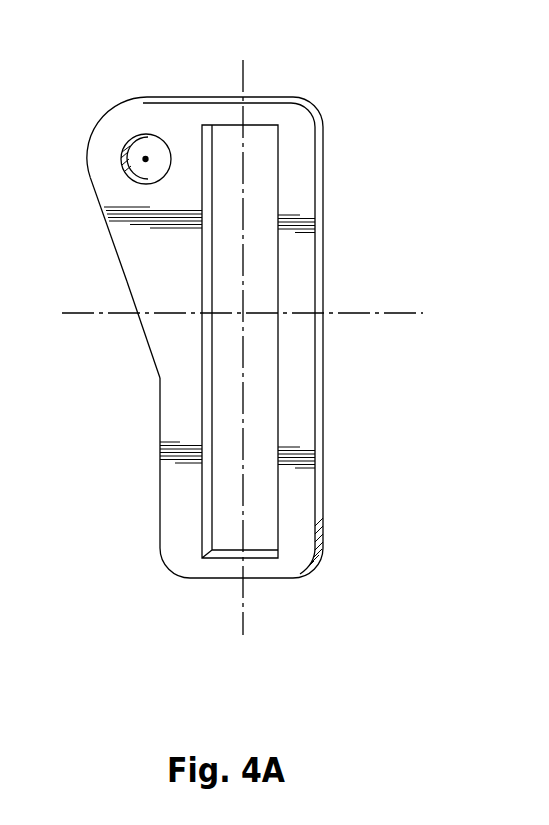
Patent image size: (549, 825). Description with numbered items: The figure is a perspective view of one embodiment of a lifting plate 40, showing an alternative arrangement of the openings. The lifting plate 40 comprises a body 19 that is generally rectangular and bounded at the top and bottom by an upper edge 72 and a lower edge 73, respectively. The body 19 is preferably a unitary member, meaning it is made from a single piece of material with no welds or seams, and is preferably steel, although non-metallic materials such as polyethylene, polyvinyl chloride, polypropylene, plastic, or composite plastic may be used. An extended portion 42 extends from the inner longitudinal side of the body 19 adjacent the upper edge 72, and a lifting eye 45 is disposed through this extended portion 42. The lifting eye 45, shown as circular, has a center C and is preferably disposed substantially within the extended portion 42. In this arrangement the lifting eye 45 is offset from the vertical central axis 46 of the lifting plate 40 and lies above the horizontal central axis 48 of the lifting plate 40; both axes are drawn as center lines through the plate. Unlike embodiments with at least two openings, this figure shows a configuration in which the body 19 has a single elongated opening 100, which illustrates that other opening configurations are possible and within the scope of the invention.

The lifting plate 40 is at (250, 364).
The upper edge 72 is at (201, 96).
The lower edge 73 is at (203, 578).
The extended portion 42 is at (143, 253).
The body 19 is at (150, 327).
The lifting eye 45 is at (148, 147).
The center C is at (144, 158).
The opening 100 is at (268, 392).
The vertical central axis 46 is at (246, 625).
The horizontal central axis 48 is at (354, 313).